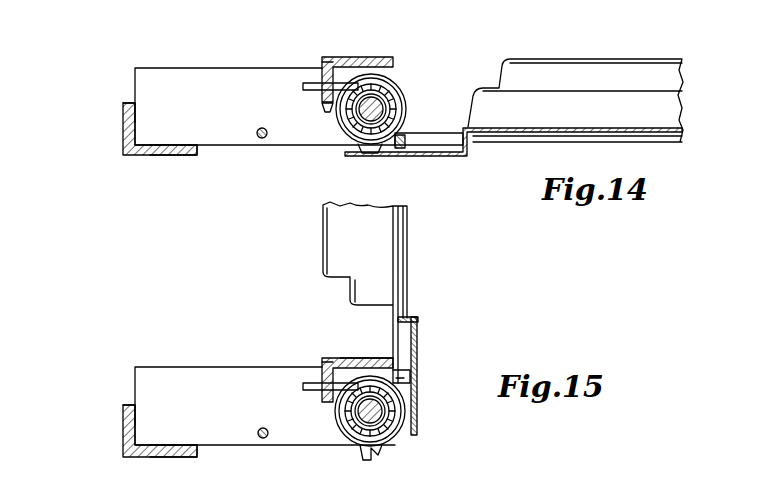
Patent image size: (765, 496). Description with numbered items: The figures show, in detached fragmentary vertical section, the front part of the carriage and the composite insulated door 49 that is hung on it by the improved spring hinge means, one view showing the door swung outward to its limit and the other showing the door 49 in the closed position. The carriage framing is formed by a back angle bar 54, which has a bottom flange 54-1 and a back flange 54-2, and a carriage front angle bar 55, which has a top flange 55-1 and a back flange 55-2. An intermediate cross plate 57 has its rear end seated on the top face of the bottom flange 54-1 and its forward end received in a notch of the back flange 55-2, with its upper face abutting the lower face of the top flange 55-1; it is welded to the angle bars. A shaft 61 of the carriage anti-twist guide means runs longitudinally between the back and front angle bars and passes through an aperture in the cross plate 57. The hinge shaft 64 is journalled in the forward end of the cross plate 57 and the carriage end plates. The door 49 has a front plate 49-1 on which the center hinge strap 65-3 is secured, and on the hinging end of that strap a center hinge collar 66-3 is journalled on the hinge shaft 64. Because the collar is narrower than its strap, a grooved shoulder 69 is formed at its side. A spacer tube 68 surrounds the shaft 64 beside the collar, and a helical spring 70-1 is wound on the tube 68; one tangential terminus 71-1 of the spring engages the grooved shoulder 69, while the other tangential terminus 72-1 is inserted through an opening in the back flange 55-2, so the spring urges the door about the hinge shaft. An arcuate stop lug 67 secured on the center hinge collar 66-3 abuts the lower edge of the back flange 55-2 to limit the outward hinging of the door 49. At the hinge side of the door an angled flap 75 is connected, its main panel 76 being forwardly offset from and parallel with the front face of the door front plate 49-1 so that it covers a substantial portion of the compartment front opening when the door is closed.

In FIG. 14, the composite insulated door 49 is at (633, 53).
In FIG. 15, the composite insulated door 49 is at (408, 236).
In FIG. 14, the front plate 49-1 is at (652, 134).
In FIG. 14, the back angle bar 54 is at (127, 140).
In FIG. 15, the back angle bar 54 is at (128, 431).
In FIG. 14, the bottom flange 54-1 is at (165, 142).
In FIG. 15, the bottom flange 54-1 is at (168, 443).
In FIG. 14, the back flange 54-2 is at (125, 108).
In FIG. 15, the back flange 54-2 is at (126, 408).
In FIG. 14, the carriage front angle bar 55 is at (378, 58).
In FIG. 15, the carriage front angle bar 55 is at (322, 384).
In FIG. 15, the top flange 55-1 is at (348, 358).
In FIG. 14, the back flange 55-2 is at (322, 70).
In FIG. 15, the back flange 55-2 is at (322, 360).
In FIG. 14, the intermediate cross plate 57 is at (196, 78).
In FIG. 15, the intermediate cross plate 57 is at (186, 375).
In FIG. 14, the shaft 61 is at (260, 139).
In FIG. 15, the shaft 61 is at (260, 440).
In FIG. 14, the hinge shaft 64 is at (376, 104).
In FIG. 15, the hinge shaft 64 is at (380, 416).
In FIG. 14, the center hinge strap 65-3 is at (493, 135).
In FIG. 14, the center hinge collar 66-3 is at (402, 100).
In FIG. 15, the center hinge collar 66-3 is at (400, 424).
In FIG. 14, the arcuate stop lug 67 is at (335, 130).
In FIG. 15, the arcuate stop lug 67 is at (363, 462).
In FIG. 14, the spacer tube 68 is at (358, 122).
In FIG. 15, the spacer tube 68 is at (357, 424).
In FIG. 14, the shoulder 69 is at (412, 146).
In FIG. 15, the shoulder 69 is at (412, 373).
In FIG. 14, the helical spring 70-1 is at (371, 124).
In FIG. 15, the helical spring 70-1 is at (378, 424).
In FIG. 14, the tangential terminus 71-1 is at (402, 130).
In FIG. 14, the tangential terminus 72-1 is at (322, 100).
In FIG. 15, the tangential terminus 72-1 is at (330, 386).
In FIG. 15, the angled flap 75 is at (420, 320).
In FIG. 15, the main panel 76 is at (418, 360).